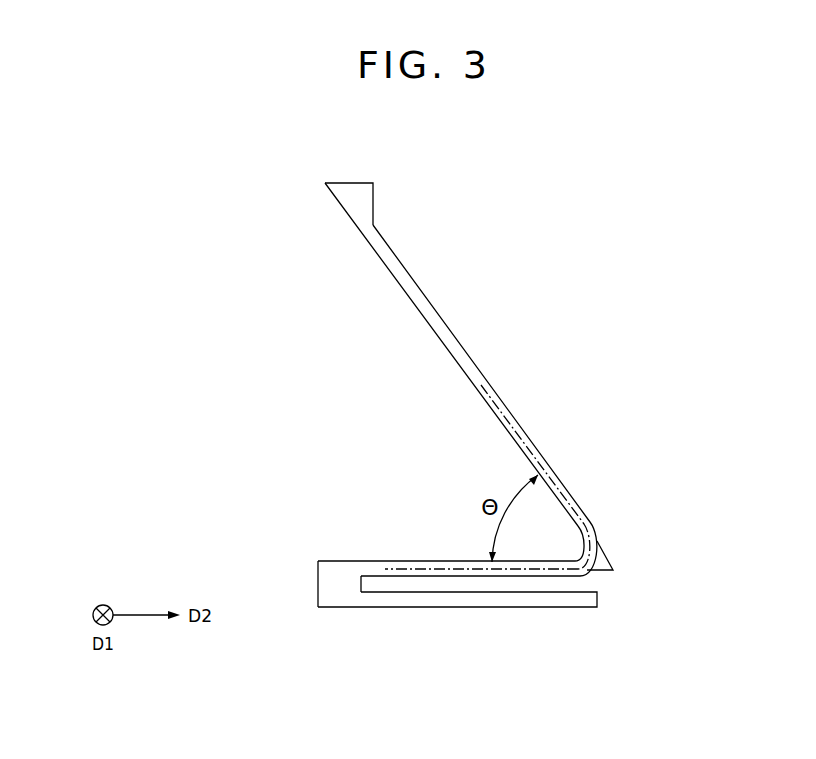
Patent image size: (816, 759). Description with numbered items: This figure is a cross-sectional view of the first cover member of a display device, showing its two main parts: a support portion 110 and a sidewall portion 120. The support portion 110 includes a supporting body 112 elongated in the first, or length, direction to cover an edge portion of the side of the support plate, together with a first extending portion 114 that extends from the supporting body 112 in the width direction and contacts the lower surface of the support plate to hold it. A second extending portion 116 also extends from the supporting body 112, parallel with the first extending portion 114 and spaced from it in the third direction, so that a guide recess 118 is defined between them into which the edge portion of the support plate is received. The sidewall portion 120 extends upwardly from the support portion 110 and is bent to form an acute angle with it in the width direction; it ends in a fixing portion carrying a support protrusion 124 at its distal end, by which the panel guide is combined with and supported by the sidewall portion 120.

The support portion 110 is at (456, 635).
The supporting body 112 is at (338, 584).
The first extending portion 114 is at (457, 668).
The second extending portion 116 is at (438, 573).
The guide recess 118 is at (590, 586).
The sidewall portion 120 is at (443, 323).
The support protrusion 124 is at (349, 188).